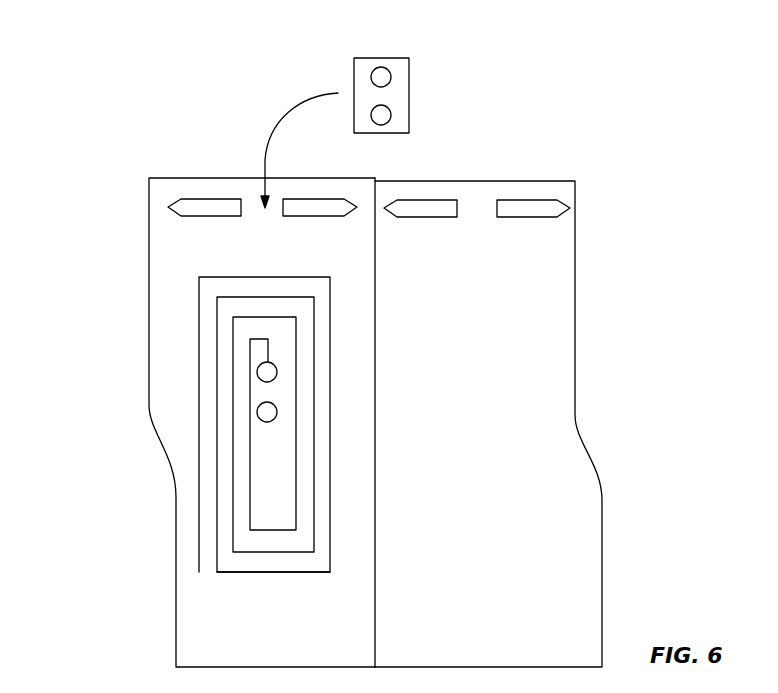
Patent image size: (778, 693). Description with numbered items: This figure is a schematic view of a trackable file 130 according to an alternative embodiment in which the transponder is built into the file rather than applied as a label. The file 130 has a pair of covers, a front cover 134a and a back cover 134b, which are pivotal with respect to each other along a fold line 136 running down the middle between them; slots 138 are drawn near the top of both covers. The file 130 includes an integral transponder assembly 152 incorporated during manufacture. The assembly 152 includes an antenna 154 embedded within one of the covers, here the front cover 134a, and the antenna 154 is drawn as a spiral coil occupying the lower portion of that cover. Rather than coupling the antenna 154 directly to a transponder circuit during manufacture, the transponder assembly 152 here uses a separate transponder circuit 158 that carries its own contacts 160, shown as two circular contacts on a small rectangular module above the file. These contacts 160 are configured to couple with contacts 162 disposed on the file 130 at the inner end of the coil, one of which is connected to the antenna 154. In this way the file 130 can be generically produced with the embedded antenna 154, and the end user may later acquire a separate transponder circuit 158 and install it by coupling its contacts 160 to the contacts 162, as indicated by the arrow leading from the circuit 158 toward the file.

The file 130 is at (379, 343).
The front cover 134a is at (159, 253).
The back cover 134b is at (566, 293).
The fold line 136 is at (378, 183).
The slots 138 is at (228, 198).
The transponder assembly 152 is at (254, 580).
The antenna 154 is at (288, 573).
The transponder circuit 158 is at (380, 58).
The contacts 160 is at (391, 79).
The contacts 162 is at (277, 373).